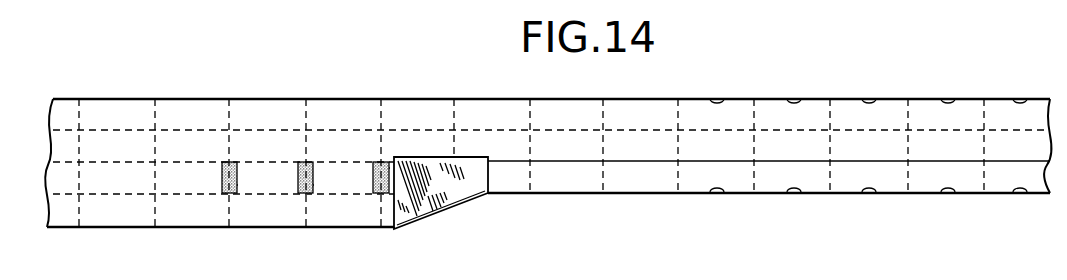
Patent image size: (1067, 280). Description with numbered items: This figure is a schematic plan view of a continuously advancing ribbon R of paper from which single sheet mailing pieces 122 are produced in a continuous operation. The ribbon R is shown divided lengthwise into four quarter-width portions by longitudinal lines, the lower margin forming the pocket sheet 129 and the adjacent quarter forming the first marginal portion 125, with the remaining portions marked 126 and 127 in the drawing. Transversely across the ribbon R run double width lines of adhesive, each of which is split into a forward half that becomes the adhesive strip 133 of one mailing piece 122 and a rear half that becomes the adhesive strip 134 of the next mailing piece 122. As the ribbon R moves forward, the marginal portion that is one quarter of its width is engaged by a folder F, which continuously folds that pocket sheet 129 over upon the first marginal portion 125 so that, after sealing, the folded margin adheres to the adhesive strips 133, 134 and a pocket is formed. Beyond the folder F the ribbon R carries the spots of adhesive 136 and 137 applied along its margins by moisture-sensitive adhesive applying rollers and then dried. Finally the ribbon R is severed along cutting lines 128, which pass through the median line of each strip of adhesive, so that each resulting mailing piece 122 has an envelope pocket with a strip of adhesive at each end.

The ribbon R is at (176, 99).
The mailing piece 122 is at (210, 98).
The cutting lines 128 is at (307, 112).
The first panel 126 is at (101, 125).
The second panel 127 is at (101, 155).
The first marginal portion 125 is at (101, 185).
The pocket sheet 129 is at (101, 218).
The adhesive strip 134 is at (222, 163).
The adhesive strip 133 is at (238, 186).
The folder F is at (437, 213).
The spot of adhesive 137 is at (718, 97).
The spot of adhesive 136 is at (717, 195).